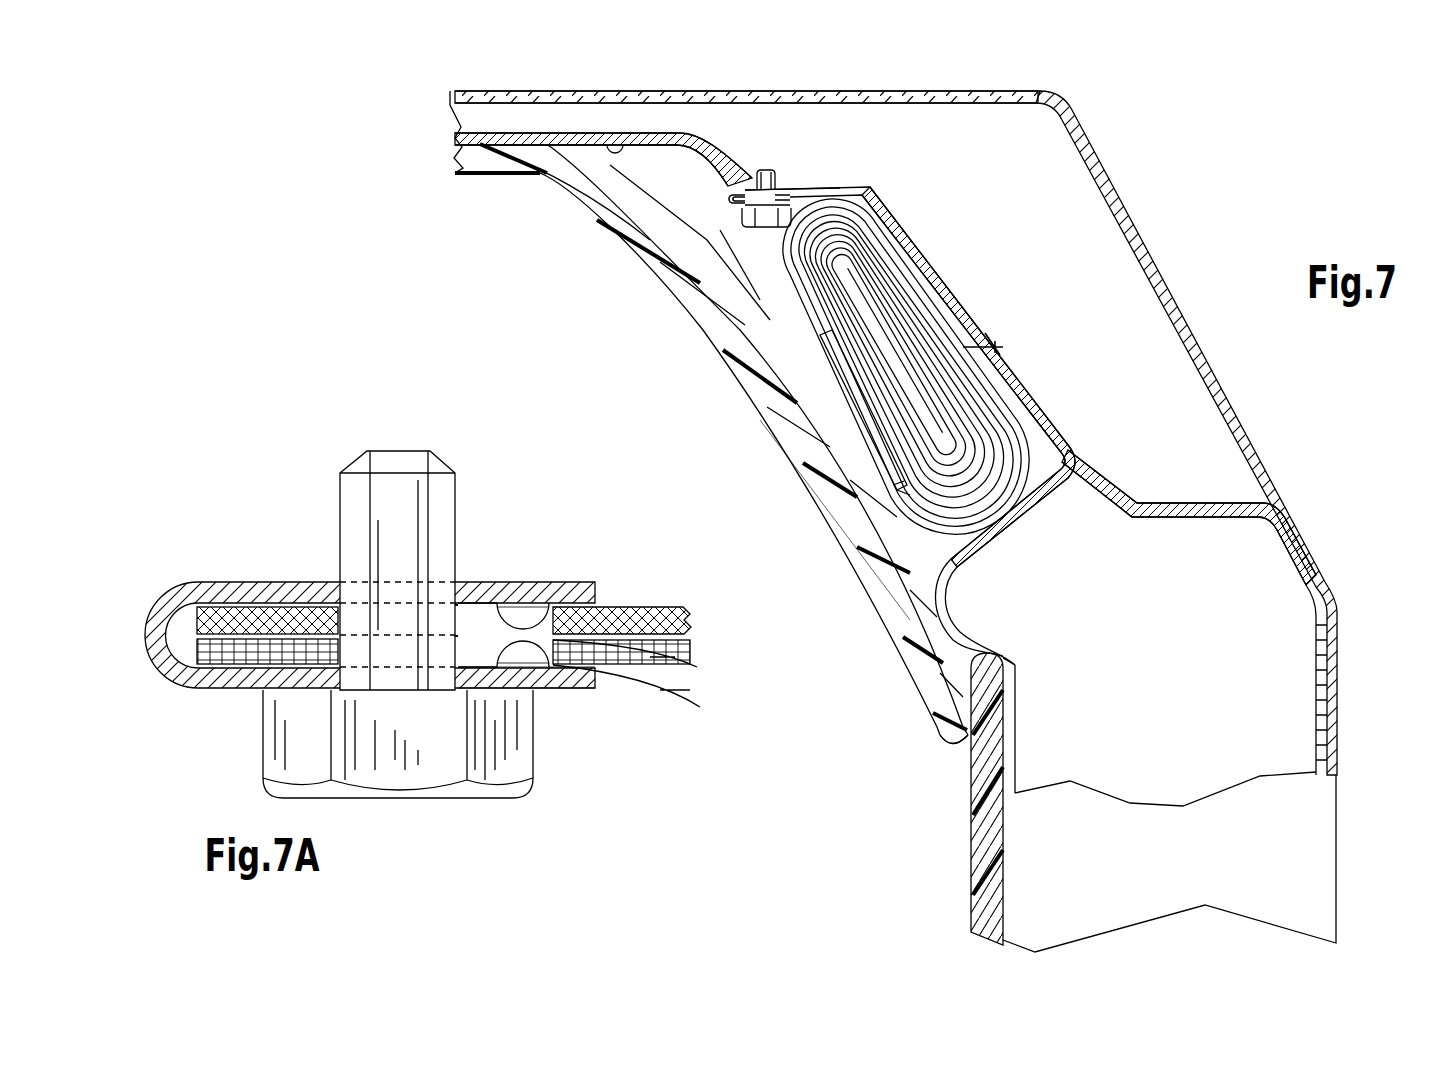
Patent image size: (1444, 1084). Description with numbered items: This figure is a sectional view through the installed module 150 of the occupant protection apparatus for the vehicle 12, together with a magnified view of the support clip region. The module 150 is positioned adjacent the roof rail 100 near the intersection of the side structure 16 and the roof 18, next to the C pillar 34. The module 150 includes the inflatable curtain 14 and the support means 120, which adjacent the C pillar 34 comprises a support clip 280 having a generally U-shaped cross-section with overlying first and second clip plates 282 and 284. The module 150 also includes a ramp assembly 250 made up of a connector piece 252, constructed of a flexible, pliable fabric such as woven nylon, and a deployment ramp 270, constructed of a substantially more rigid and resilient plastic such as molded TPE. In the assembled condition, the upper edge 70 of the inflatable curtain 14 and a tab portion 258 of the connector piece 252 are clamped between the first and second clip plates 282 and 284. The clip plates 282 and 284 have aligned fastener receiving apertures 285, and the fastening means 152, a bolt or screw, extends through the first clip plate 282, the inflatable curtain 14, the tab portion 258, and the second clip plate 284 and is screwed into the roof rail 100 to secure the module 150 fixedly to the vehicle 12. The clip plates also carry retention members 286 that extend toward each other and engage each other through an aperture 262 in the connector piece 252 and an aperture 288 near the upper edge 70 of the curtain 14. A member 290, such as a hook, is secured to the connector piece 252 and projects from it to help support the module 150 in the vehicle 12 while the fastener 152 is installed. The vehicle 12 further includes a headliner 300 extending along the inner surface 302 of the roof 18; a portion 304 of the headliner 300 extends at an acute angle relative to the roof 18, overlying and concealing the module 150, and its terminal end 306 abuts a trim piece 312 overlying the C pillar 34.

In FIG. 7, the vehicle 12 is at (1175, 172).
In FIG. 7A, the inflatable curtain 14 is at (650, 690).
In FIG. 7, the side structure 16 is at (1362, 627).
In FIG. 7, the roof 18 is at (440, 92).
In FIG. 7, the C pillar 34 is at (1362, 741).
In FIG. 7A, the upper edge 70 is at (232, 655).
In FIG. 7, the roof rail 100 is at (1220, 212).
In FIG. 7, the support means 120 is at (745, 222).
In FIG. 7, the module 150 is at (902, 525).
In FIG. 7A, the fastening means 152 is at (407, 757).
In FIG. 7, the ramp assembly 250 is at (863, 420).
In FIG. 7, the connector piece 252 is at (1020, 403).
In FIG. 7A, the connector piece 252 is at (603, 600).
In FIG. 7, the tab portion 258 is at (745, 185).
In FIG. 7A, the tab portion 258 is at (237, 617).
In FIG. 7A, the aperture 262 is at (473, 603).
In FIG. 7, the deployment ramp 270 is at (693, 297).
In FIG. 7, the support clip 280 is at (726, 199).
In FIG. 7A, the support clip 280 is at (160, 622).
In FIG. 7, the first clip plate 282 is at (795, 226).
In FIG. 7A, the first clip plate 282 is at (583, 690).
In FIG. 7, the second clip plate 284 is at (792, 200).
In FIG. 7A, the second clip plate 284 is at (500, 600).
In FIG. 7A, the fastener receiving apertures 285 is at (330, 662).
In FIG. 7A, the retention members 286 is at (528, 630).
In FIG. 7A, the aperture 288 is at (490, 690).
In FIG. 7, the member 290 is at (987, 342).
In FIG. 7, the headliner 300 is at (487, 160).
In FIG. 7, the inner surface 302 is at (640, 140).
In FIG. 7, the portion 304 is at (847, 503).
In FIG. 7, the terminal end 306 is at (940, 736).
In FIG. 7, the trim piece 312 is at (990, 837).